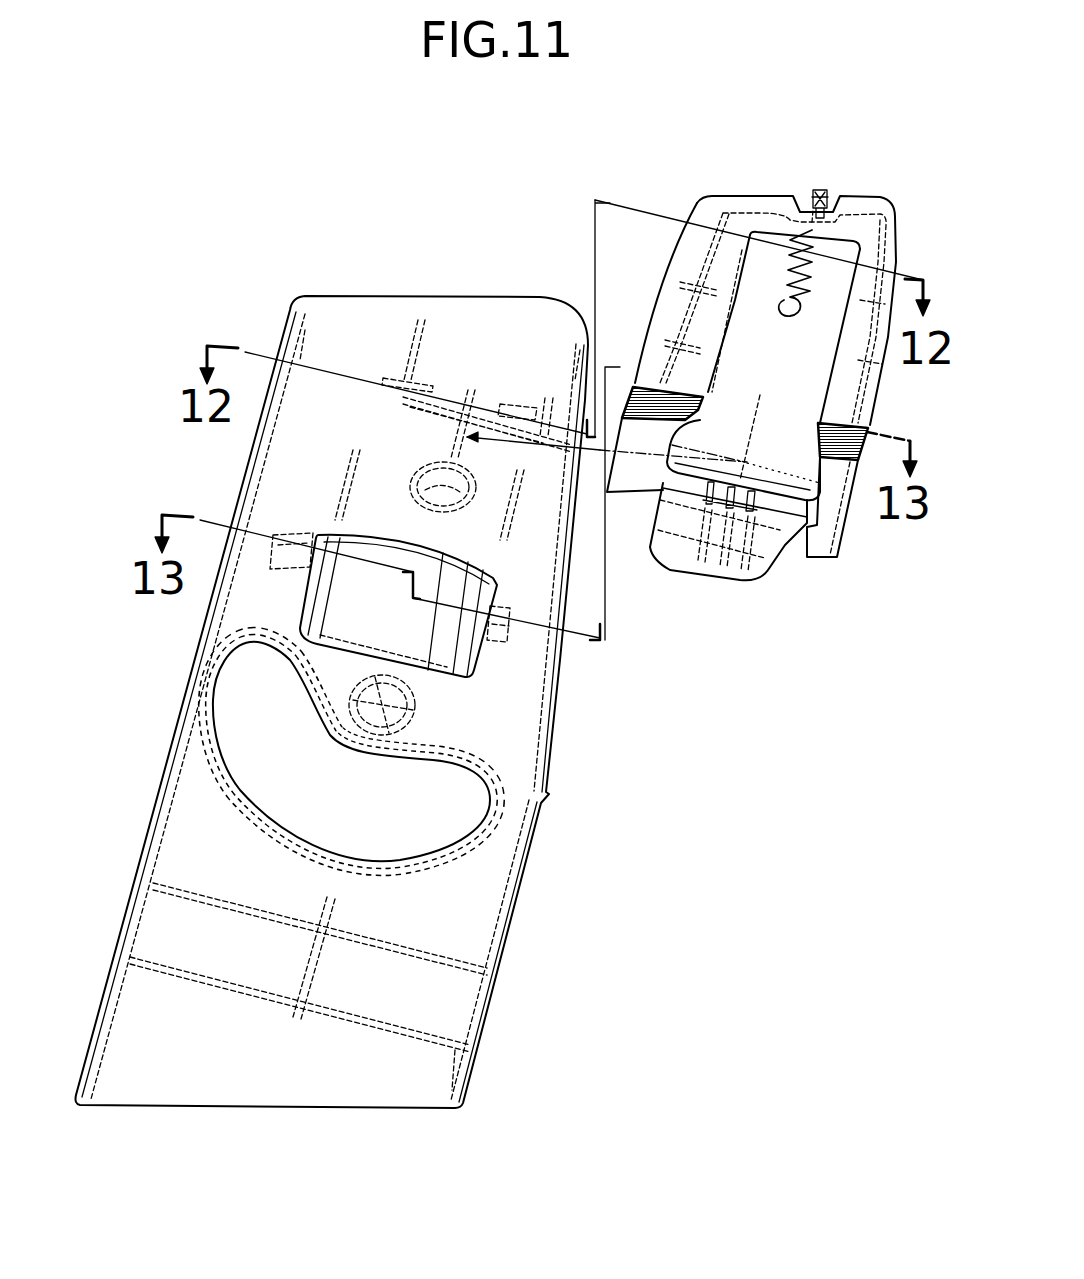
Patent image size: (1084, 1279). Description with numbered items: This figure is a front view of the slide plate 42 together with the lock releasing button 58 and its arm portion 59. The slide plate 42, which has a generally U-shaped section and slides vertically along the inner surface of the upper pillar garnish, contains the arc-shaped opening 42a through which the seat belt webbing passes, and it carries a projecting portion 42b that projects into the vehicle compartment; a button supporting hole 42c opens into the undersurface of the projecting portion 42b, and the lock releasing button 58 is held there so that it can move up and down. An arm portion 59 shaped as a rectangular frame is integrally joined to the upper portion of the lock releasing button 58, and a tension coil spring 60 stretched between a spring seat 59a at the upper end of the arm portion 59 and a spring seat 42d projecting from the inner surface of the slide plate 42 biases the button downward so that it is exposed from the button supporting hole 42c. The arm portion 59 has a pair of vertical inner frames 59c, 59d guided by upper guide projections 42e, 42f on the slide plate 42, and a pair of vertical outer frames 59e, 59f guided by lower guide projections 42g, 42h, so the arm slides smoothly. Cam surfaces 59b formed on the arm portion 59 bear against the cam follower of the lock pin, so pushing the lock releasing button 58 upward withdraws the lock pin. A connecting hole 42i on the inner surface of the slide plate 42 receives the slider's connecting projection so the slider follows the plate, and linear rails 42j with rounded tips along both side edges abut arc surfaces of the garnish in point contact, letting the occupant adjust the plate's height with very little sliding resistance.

The slide plate 42 is at (365, 702).
The arc-shaped opening 42a is at (308, 862).
The projecting portion 42b is at (420, 633).
The button supporting hole 42c is at (353, 657).
The spring seat 42d is at (450, 432).
The upper guide projection 42e is at (533, 398).
The upper guide projection 42f is at (378, 375).
The lower guide projection 42g is at (488, 650).
The lower guide projection 42h is at (298, 572).
The connecting hole 42i is at (412, 498).
The linear rail 42j is at (548, 592).
The lock releasing button 58 is at (740, 578).
The arm portion 59 is at (720, 196).
The spring seat 59a is at (819, 190).
The cam surface 59b is at (677, 450).
The inner frame 59c is at (825, 392).
The inner frame 59d is at (733, 306).
The outer frame 59e is at (868, 412).
The outer frame 59f is at (645, 328).
The tension coil spring 60 is at (793, 250).